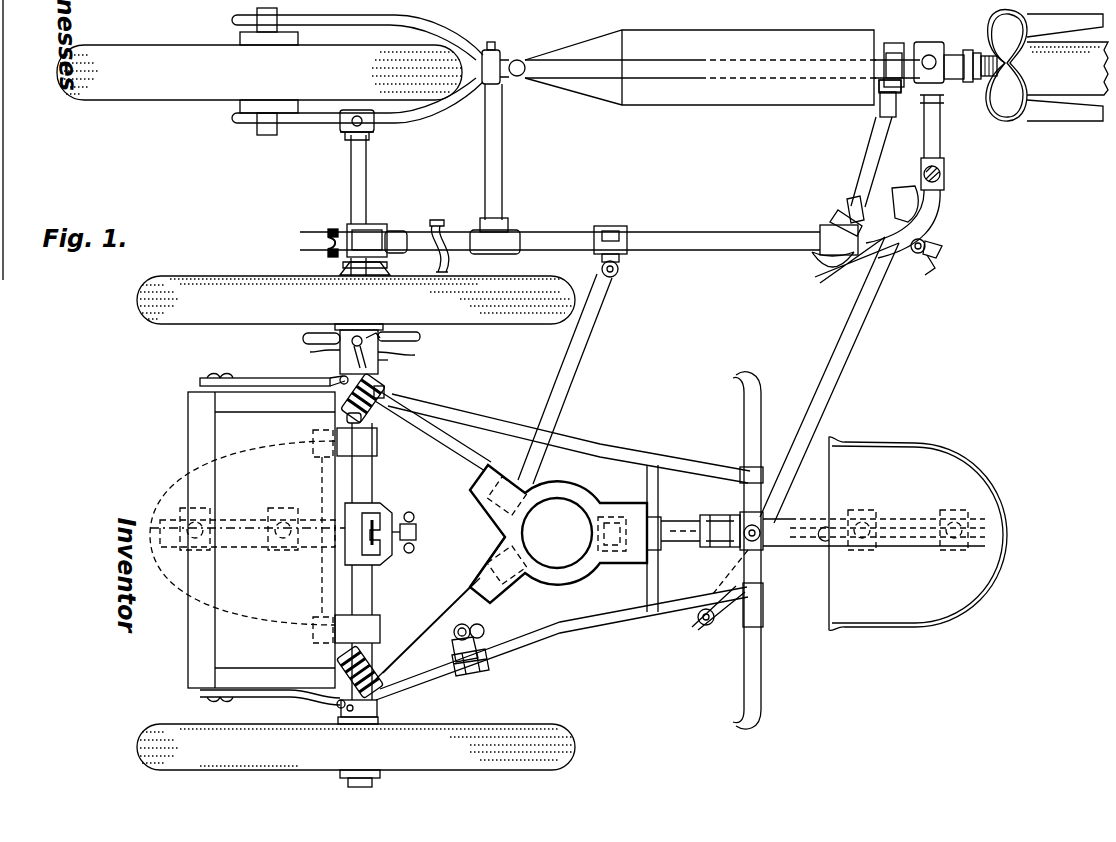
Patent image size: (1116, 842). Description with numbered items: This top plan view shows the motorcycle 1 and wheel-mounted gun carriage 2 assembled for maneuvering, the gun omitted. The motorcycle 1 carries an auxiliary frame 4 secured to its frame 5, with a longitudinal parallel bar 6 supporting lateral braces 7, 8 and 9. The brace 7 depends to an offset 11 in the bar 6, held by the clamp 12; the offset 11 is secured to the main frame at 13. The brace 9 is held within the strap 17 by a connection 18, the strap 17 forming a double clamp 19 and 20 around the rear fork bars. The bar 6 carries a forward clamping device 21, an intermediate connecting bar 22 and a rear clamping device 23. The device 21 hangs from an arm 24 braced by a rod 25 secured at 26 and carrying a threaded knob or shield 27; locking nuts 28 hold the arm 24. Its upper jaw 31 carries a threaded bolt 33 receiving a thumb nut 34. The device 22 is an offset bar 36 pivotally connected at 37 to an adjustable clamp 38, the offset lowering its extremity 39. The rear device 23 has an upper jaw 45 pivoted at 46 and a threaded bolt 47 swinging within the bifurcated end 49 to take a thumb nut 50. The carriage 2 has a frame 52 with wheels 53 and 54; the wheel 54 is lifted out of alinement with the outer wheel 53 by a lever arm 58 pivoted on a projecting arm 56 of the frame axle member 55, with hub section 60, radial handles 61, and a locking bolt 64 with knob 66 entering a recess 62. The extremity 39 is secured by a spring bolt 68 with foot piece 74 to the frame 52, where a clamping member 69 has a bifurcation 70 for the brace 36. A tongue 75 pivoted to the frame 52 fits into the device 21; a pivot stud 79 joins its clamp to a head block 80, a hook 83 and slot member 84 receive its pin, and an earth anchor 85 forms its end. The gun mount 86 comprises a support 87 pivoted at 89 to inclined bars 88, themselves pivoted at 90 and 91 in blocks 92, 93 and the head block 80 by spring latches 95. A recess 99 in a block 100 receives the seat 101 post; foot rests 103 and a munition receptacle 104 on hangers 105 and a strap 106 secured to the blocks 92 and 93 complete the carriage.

The motorcycle 1 is at (508, 52).
The wheel-mounted field piece or gun carriage 2 is at (562, 612).
The auxiliary frame 4 is at (500, 226).
The frame of the motorcycle 5 is at (678, 82).
The parallel bar 6 is at (716, 240).
The lateral brace 7 is at (946, 171).
The lateral brace 8 is at (497, 202).
The lateral brace 9 is at (366, 175).
The offset 11 is at (941, 131).
The clamp 12 is at (942, 193).
The connection of offset to main frame 13 is at (936, 43).
The strap 17 is at (346, 134).
The connection 18 is at (350, 114).
The double clamp 19 is at (372, 98).
The double clamp 20 is at (372, 120).
The forward clamping device 21 is at (880, 280).
The intermediate bracing and connecting bar 22 is at (612, 312).
The rear clamping device 23 is at (343, 265).
The arm 24 is at (836, 216).
The rod 25 is at (871, 151).
The rod securing point 26 is at (895, 44).
The internally threaded knob or shield 27 is at (832, 266).
The locking nut 28 is at (850, 201).
The upper jaw 31 is at (927, 243).
The threaded bolt 33 is at (940, 255).
The thumb nut 34 is at (929, 268).
The offset bar 36 is at (573, 402).
The pivotal connection 37 is at (619, 270).
The adjustable clamp 38 is at (603, 231).
The extremity 39 is at (485, 558).
The upper jaw 45 is at (380, 228).
The pivot 46 is at (382, 260).
The threaded bolt 47 is at (327, 241).
The bifurcated end 49 is at (327, 252).
The thumb nut 50 is at (338, 229).
The frame 52 is at (620, 452).
The outer wheel 53 is at (535, 726).
The wheel 54 is at (356, 316).
The frame axle member 55 is at (366, 491).
The projecting arm 56 is at (380, 361).
The lever arm 58 is at (415, 355).
The hub section 60 is at (340, 352).
The radial arms or handles 61 is at (305, 339).
The recess 62 is at (700, 625).
The locking bolt 64 is at (357, 330).
The hand grip piece or knob 66 is at (383, 336).
The bolt connection 68 is at (454, 644).
The clamping member 69 is at (486, 672).
The bifurcation 70 is at (440, 236).
The projecting foot or hand piece 74 is at (485, 631).
The brace and tongue 75 is at (824, 408).
The pivot stud 79 is at (770, 524).
The head block 80 is at (765, 552).
The projecting hook 83 is at (738, 627).
The open slot member 84 is at (690, 547).
The earth plate or anchor 85 is at (905, 190).
The gun mount or support 86 is at (557, 533).
The support 87 is at (598, 507).
The inclined bars 88 is at (470, 466).
The pivot 89 is at (543, 484).
The pivot 90 is at (350, 716).
The pivot 91 is at (347, 408).
The block 92 is at (378, 705).
The block 93 is at (385, 392).
The spring latches 95 is at (318, 446).
The recess 99 is at (378, 545).
The block 100 is at (386, 510).
The seat 101 is at (918, 534).
The foot rests 103 is at (762, 432).
The munition receptacle 104 is at (198, 442).
The hangers 105 is at (372, 448).
The strap 106 is at (248, 378).